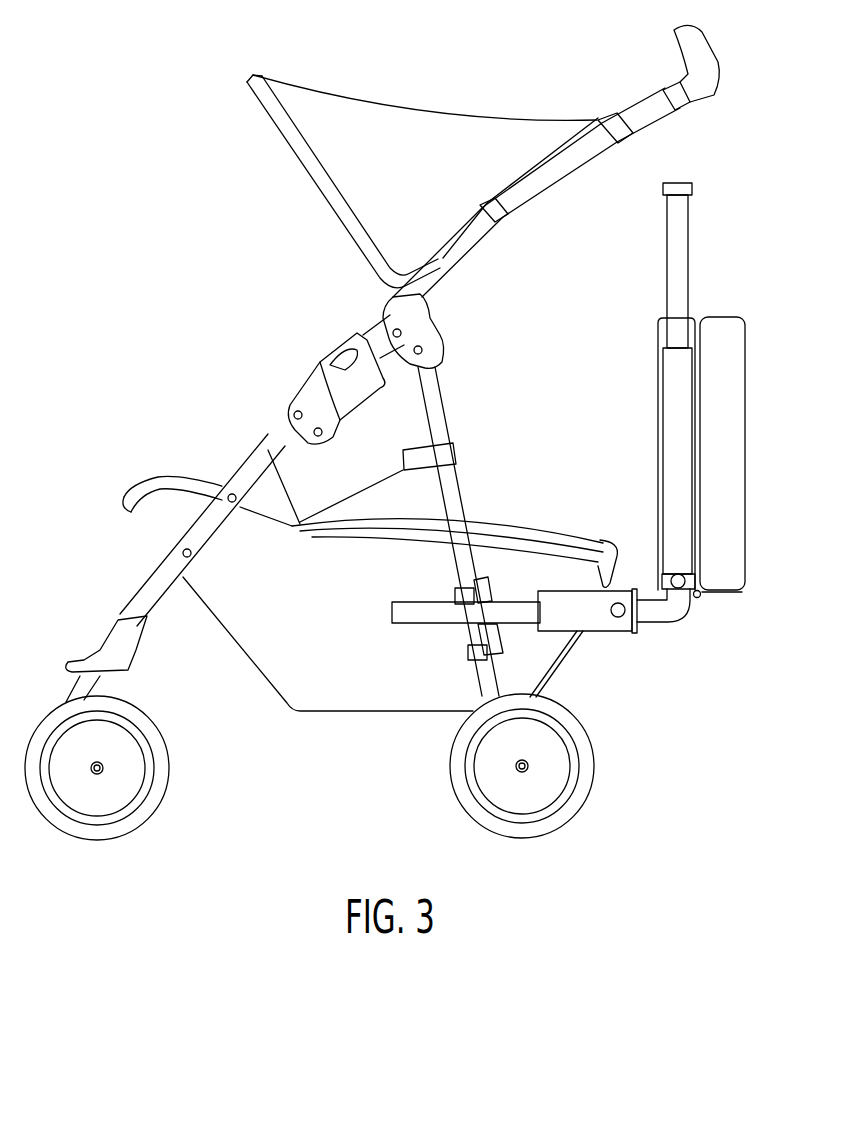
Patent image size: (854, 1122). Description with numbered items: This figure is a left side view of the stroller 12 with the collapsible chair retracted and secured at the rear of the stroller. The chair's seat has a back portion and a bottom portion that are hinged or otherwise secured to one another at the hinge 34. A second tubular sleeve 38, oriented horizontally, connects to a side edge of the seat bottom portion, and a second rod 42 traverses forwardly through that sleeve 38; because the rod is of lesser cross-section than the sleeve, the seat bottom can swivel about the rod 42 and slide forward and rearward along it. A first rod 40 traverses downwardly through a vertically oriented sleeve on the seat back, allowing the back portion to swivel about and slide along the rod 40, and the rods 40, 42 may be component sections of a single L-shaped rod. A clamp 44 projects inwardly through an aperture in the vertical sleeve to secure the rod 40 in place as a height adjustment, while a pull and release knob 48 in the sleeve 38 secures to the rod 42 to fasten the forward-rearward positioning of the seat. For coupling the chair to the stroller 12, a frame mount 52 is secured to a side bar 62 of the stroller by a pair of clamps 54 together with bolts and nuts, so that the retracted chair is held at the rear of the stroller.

The stroller 12 is at (270, 377).
The hinge 34 is at (697, 600).
The second tubular sleeve 38 is at (578, 626).
The first rod 40 is at (670, 217).
The second rod 42 is at (392, 611).
The clamp 44 is at (676, 575).
The pull and release knob 48 is at (618, 618).
The frame mount 52 is at (488, 585).
The clamps 54 is at (455, 594).
The side bar 62 is at (447, 490).